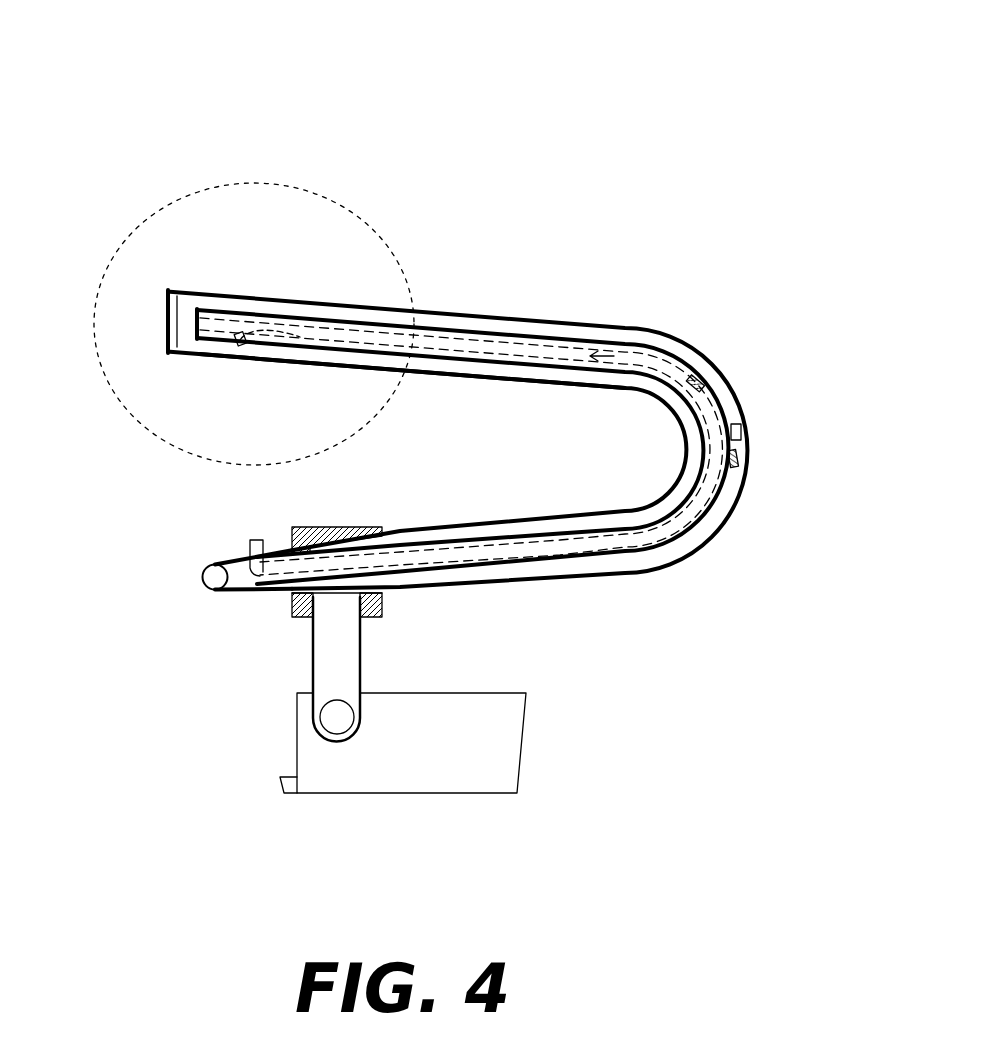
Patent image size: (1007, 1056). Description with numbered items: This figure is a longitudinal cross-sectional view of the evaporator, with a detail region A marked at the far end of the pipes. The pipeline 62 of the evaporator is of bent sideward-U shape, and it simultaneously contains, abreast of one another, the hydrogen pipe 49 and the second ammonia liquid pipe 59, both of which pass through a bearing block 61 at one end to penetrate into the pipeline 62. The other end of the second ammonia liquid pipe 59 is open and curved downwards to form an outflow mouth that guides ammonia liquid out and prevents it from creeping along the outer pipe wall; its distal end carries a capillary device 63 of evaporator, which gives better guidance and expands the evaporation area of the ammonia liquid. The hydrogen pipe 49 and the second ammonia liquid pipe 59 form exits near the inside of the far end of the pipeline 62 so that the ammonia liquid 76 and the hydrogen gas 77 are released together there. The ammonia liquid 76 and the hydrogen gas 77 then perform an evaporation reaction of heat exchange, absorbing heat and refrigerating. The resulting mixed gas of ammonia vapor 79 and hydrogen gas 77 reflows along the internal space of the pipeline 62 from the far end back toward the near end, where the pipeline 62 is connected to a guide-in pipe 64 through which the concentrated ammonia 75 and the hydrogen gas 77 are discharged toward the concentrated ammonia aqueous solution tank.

The detail region A is at (283, 183).
The hydrogen pipe 49 is at (200, 338).
The second ammonia liquid pipe 59 is at (300, 332).
The bearing block 61 is at (300, 602).
The pipeline 62 is at (745, 455).
The capillary device of evaporator 63 is at (247, 355).
The guide-in pipe 64 is at (358, 645).
The concentrated ammonia 75 is at (343, 723).
The ammonia liquid 76 is at (350, 333).
The hydrogen gas 77 is at (190, 315).
The ammonia vapor 79 is at (435, 368).